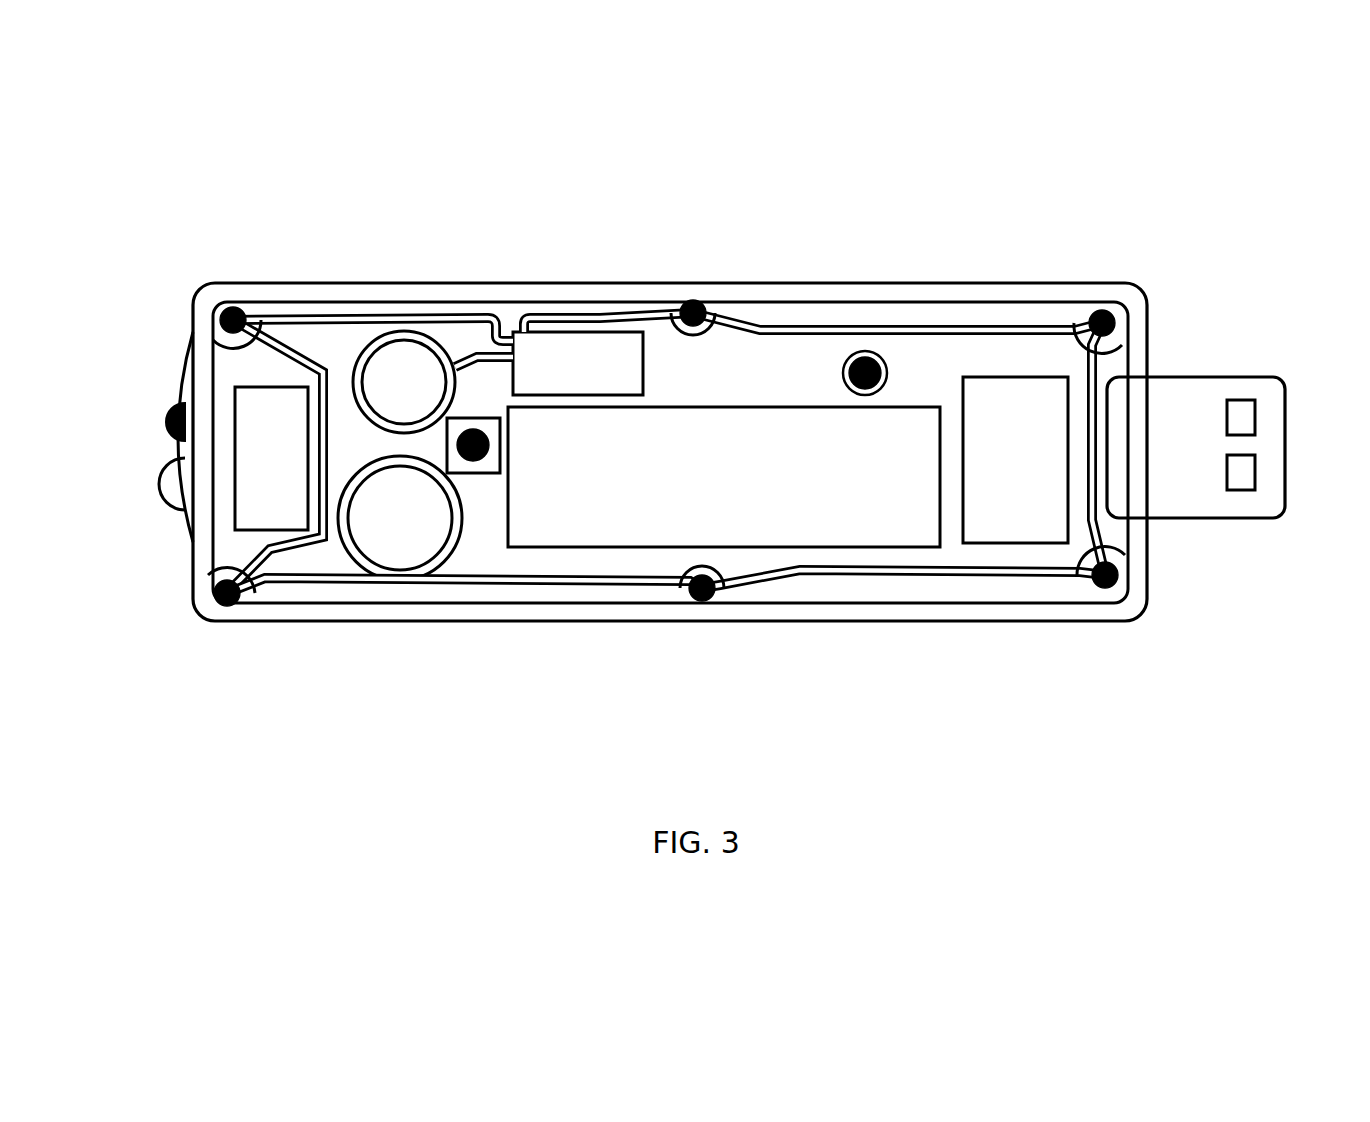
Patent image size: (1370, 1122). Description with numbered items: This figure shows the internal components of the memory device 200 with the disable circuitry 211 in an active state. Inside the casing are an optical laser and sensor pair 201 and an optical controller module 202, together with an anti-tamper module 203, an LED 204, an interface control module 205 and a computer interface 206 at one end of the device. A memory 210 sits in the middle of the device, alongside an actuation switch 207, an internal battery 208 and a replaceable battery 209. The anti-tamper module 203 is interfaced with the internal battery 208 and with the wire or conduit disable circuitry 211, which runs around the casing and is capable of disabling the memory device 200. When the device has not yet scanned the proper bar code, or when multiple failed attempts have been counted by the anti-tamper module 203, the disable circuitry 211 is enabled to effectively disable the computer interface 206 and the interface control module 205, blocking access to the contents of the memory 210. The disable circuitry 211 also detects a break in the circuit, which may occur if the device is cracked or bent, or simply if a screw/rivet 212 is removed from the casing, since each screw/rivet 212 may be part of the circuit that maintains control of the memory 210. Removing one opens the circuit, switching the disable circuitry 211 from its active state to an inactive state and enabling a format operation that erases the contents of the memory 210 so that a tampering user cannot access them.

The memory device 200 is at (1128, 338).
The optical laser and sensor pair 201 is at (200, 322).
The optical controller module 202 is at (267, 452).
The anti-tamper module 203 is at (598, 345).
The LED 204 is at (872, 352).
The interface control module 205 is at (1035, 397).
The computer interface 206 is at (1148, 475).
The actuation switch 207 is at (488, 457).
The internal battery 208 is at (403, 382).
The replaceable battery 209 is at (393, 517).
The memory 210 is at (617, 467).
The disable circuitry 211 is at (887, 575).
The screw/rivet 212 is at (1093, 587).